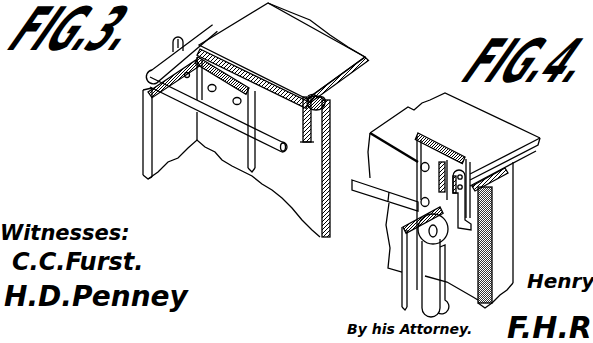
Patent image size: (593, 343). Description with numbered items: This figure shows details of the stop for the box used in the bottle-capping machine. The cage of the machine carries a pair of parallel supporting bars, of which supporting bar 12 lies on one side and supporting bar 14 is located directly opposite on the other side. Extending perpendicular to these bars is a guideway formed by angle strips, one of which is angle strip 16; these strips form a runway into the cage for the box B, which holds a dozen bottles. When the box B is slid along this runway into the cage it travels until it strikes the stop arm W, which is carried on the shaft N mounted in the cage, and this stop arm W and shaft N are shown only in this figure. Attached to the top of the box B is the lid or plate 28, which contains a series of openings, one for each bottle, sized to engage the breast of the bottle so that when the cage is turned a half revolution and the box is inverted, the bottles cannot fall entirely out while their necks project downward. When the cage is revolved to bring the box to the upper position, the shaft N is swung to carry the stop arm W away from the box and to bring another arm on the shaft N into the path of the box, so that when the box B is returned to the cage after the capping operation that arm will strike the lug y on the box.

In FIG. 3, the lid or plate 28 is at (336, 51).
In FIG. 3, the angle strip 16 is at (237, 114).
In FIG. 4, the angle strip 16 is at (446, 189).
In FIG. 3, the supporting bar 12 is at (205, 162).
In FIG. 3, the shaft N is at (277, 153).
In FIG. 3, the stop arm W is at (151, 71).
In FIG. 3, the post x is at (178, 37).
In FIG. 3, the box B is at (303, 205).
In FIG. 4, the box B is at (502, 228).
In FIG. 4, the supporting bar 14 is at (402, 278).
In FIG. 4, the lug y is at (463, 218).